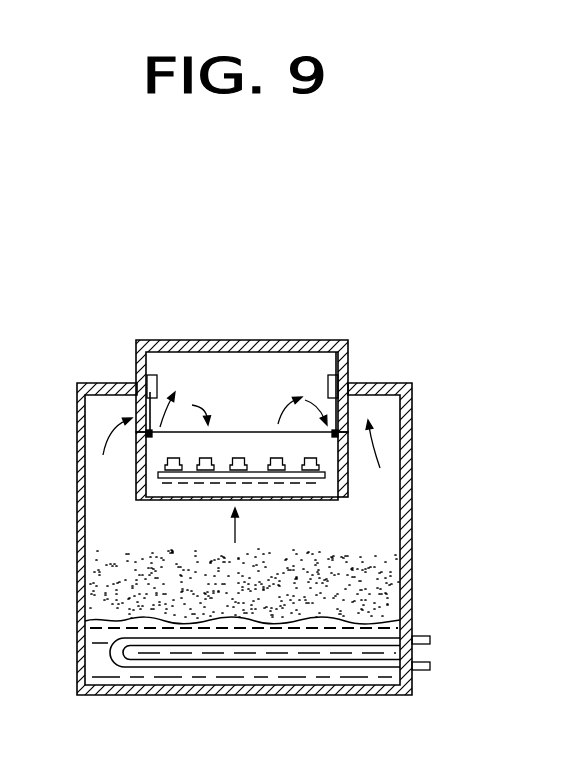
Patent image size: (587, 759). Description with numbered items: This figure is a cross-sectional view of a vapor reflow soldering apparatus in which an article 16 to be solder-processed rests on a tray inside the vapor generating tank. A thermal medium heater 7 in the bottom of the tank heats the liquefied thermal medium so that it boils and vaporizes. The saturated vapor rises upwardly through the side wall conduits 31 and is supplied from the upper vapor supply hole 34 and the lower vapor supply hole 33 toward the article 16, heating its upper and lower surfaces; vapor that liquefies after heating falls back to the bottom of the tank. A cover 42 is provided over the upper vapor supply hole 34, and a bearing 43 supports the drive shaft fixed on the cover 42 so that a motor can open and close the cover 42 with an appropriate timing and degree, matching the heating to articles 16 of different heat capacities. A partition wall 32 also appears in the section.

The thermal medium heater 7 is at (418, 637).
The article 16 is at (182, 478).
The side wall conduit 31 is at (377, 460).
The partition wall 32 is at (348, 444).
The lower vapor supply hole 33 is at (283, 499).
The upper vapor supply hole 34 is at (355, 413).
The cover 42 is at (322, 418).
The bearing 43 is at (330, 384).